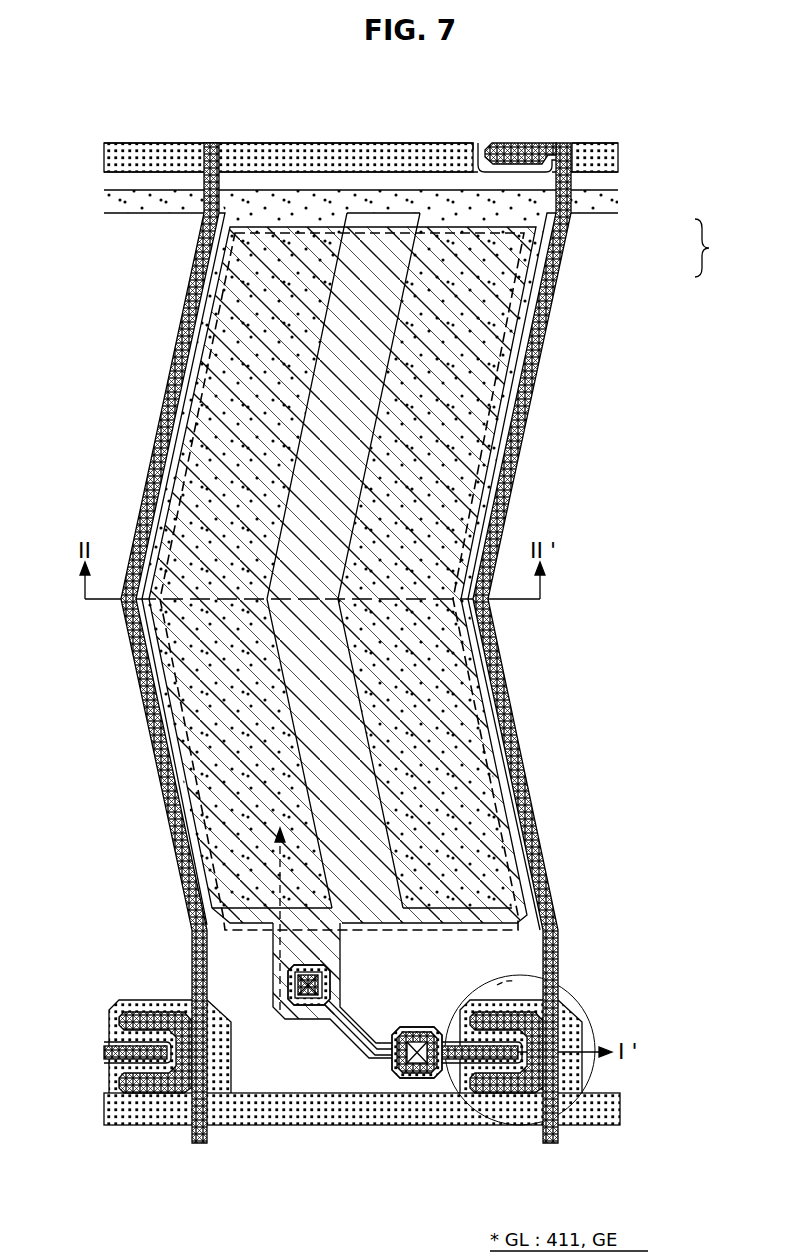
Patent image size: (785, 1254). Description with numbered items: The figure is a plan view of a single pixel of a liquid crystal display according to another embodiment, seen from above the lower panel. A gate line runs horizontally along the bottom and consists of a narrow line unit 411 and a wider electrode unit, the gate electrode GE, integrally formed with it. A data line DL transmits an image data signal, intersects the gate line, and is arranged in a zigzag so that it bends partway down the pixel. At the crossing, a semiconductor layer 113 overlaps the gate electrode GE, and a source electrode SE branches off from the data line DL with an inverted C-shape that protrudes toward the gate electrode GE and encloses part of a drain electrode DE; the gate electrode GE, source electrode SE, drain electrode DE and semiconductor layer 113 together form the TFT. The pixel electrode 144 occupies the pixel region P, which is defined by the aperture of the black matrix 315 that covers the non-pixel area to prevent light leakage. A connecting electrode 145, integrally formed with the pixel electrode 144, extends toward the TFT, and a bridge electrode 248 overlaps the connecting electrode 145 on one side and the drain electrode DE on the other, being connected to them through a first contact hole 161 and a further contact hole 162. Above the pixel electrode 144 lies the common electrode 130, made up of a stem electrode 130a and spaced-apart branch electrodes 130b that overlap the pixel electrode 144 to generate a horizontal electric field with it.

The common electrode 130 is at (722, 248).
The stem electrode 130a is at (587, 209).
The branch electrodes 130b is at (537, 265).
The data line DL is at (511, 484).
The pixel electrode 144 is at (330, 765).
The black matrix 315 is at (168, 686).
The pixel region P is at (508, 937).
The line unit 411 is at (231, 1112).
The gate electrode GE is at (538, 983).
The thin film transistor TFT is at (390, 1057).
The semiconductor layer 113 is at (492, 1070).
The source electrode SE is at (512, 1085).
The drain electrode DE is at (455, 1061).
The second contact hole 162 is at (418, 1080).
The connecting electrode 145 is at (285, 1010).
The bridge electrode 248 is at (362, 1043).
The first contact hole 161 is at (352, 1033).